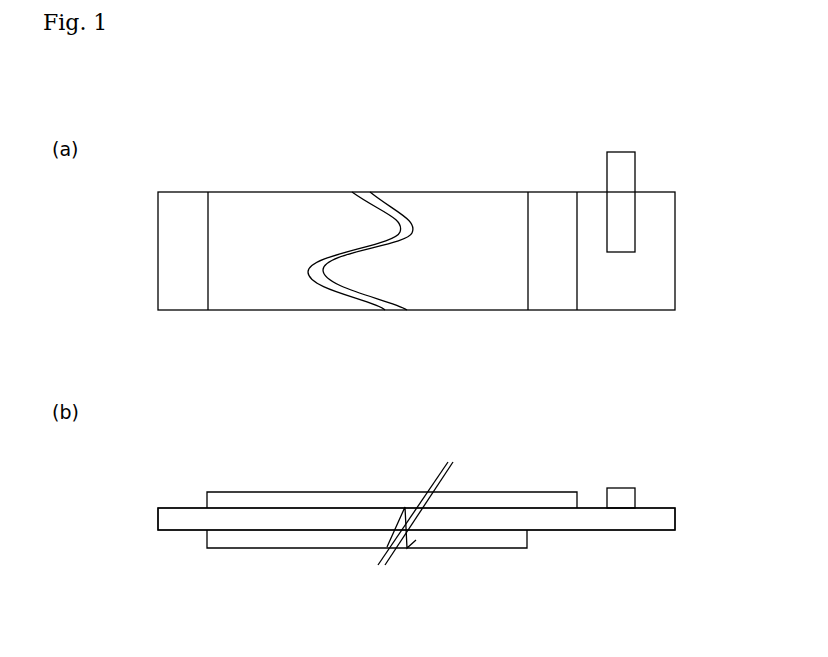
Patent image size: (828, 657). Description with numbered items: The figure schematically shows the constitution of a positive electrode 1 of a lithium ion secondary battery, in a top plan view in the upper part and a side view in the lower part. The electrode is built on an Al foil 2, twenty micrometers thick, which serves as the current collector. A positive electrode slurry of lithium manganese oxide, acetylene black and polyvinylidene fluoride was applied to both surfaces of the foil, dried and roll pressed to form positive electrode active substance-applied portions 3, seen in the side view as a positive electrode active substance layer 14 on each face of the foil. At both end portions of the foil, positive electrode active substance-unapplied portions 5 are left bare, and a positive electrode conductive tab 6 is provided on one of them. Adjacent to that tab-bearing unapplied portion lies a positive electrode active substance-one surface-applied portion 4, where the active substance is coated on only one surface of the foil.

The positive electrode 1 is at (366, 359).
The Al foil 2 is at (607, 522).
The positive electrode active substance-applied portion 3 is at (263, 213).
The positive electrode active substance-one surface-applied portion 4 is at (553, 207).
The positive electrode active substance-unapplied portion 5 is at (188, 298).
The positive electrode conductive tab 6 is at (620, 158).
The positive electrode active substance layer 14 is at (485, 495).